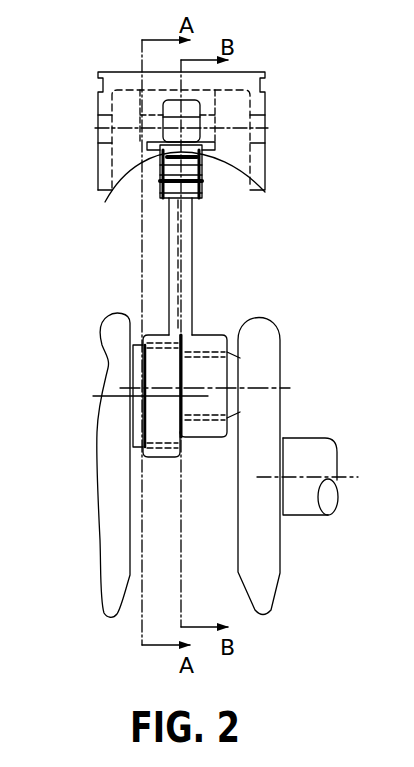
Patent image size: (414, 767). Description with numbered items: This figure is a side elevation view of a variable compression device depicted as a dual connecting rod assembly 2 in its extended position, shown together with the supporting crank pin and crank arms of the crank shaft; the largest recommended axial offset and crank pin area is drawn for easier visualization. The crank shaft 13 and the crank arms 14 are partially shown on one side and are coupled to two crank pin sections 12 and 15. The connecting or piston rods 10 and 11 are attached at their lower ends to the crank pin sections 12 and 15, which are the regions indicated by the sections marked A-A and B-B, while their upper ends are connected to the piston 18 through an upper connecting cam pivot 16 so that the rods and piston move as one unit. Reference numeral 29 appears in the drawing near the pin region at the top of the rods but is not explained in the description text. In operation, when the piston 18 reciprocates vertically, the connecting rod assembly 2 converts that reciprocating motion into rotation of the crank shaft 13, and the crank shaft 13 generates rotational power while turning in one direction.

The assembly 2 is at (170, 266).
The connecting rod 10 is at (170, 266).
The connecting rod 11 is at (158, 303).
The crank pin section 12 is at (128, 380).
The crank shaft 13 is at (298, 518).
The crank arms 14 is at (268, 608).
The crank pin section 15 is at (228, 374).
The upper connecting cam pivot 16 is at (207, 192).
The piston 18 is at (268, 162).
The piston pin 29 is at (153, 182).